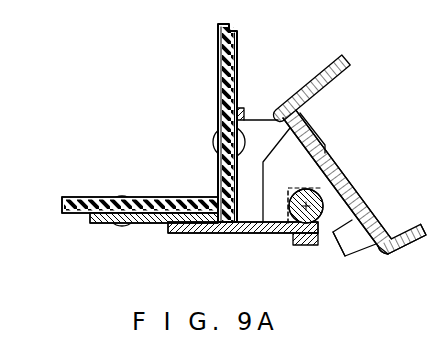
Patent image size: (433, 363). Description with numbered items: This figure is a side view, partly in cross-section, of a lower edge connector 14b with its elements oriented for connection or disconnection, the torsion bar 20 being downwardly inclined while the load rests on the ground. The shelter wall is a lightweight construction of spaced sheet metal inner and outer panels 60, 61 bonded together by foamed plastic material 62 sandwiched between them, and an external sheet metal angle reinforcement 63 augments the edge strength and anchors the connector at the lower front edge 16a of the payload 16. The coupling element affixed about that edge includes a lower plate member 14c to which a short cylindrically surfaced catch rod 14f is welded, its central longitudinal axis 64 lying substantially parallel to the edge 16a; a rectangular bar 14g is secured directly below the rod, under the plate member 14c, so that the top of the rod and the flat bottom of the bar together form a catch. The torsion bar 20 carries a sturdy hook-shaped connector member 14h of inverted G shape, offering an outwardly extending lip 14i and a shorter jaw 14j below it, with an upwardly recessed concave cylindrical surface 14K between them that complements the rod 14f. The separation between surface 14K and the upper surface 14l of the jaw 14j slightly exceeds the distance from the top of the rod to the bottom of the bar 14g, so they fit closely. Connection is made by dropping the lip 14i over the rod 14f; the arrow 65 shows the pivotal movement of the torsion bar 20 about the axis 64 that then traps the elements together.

The payload 16 is at (216, 72).
The lower front edge 16a is at (219, 197).
The lower edge connector 14b is at (268, 100).
The torsion bar 20 is at (330, 79).
The rectangular bar 14g is at (305, 246).
The hook-shaped connector member 14h is at (286, 157).
The concave cylindrical surface 14K is at (311, 181).
The lip 14i is at (273, 216).
The central longitudinal axis 64 is at (333, 201).
The upper surface of lower jaw 14l is at (337, 229).
The foamed plastic material 62 is at (88, 200).
The inner panel 60 is at (165, 191).
The outer panel 61 is at (77, 215).
The sheet metal angle reinforcement 63 is at (150, 219).
The lower plate member 14c is at (220, 229).
The catch rod 14f is at (277, 231).
The jaw 14j is at (345, 259).
The arrow 65 is at (362, 281).